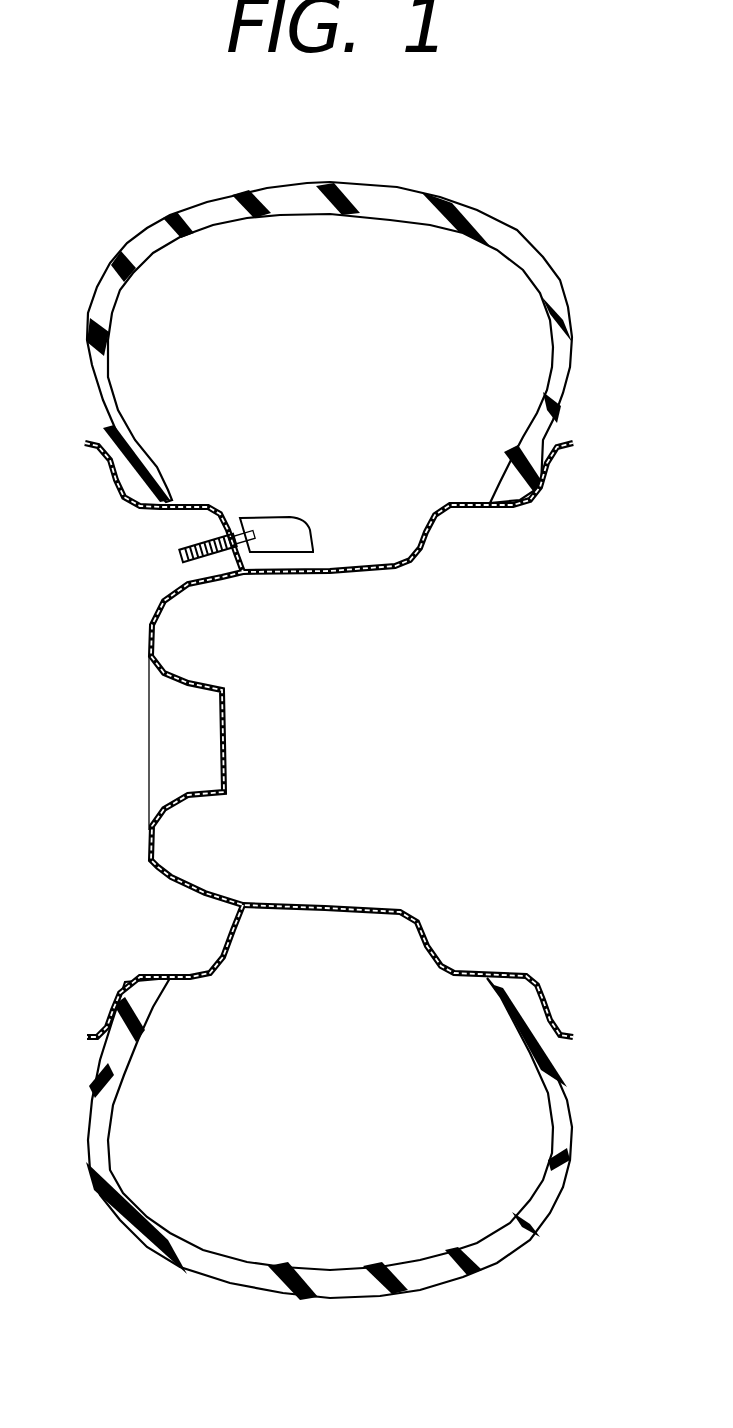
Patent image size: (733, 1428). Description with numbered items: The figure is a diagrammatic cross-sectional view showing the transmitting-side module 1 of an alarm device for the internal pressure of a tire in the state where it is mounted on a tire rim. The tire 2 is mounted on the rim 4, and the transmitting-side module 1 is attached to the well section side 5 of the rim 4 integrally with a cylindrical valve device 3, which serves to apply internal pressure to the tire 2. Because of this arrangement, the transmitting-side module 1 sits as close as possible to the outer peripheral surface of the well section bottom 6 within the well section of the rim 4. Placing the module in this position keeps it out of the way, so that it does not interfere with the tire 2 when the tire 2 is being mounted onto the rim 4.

The transmitting-side module 1 is at (272, 530).
The tire 2 is at (463, 208).
The cylindrical valve device 3 is at (177, 560).
The rim 4 is at (435, 595).
The well section side 5 is at (217, 522).
The well section bottom 6 is at (332, 574).